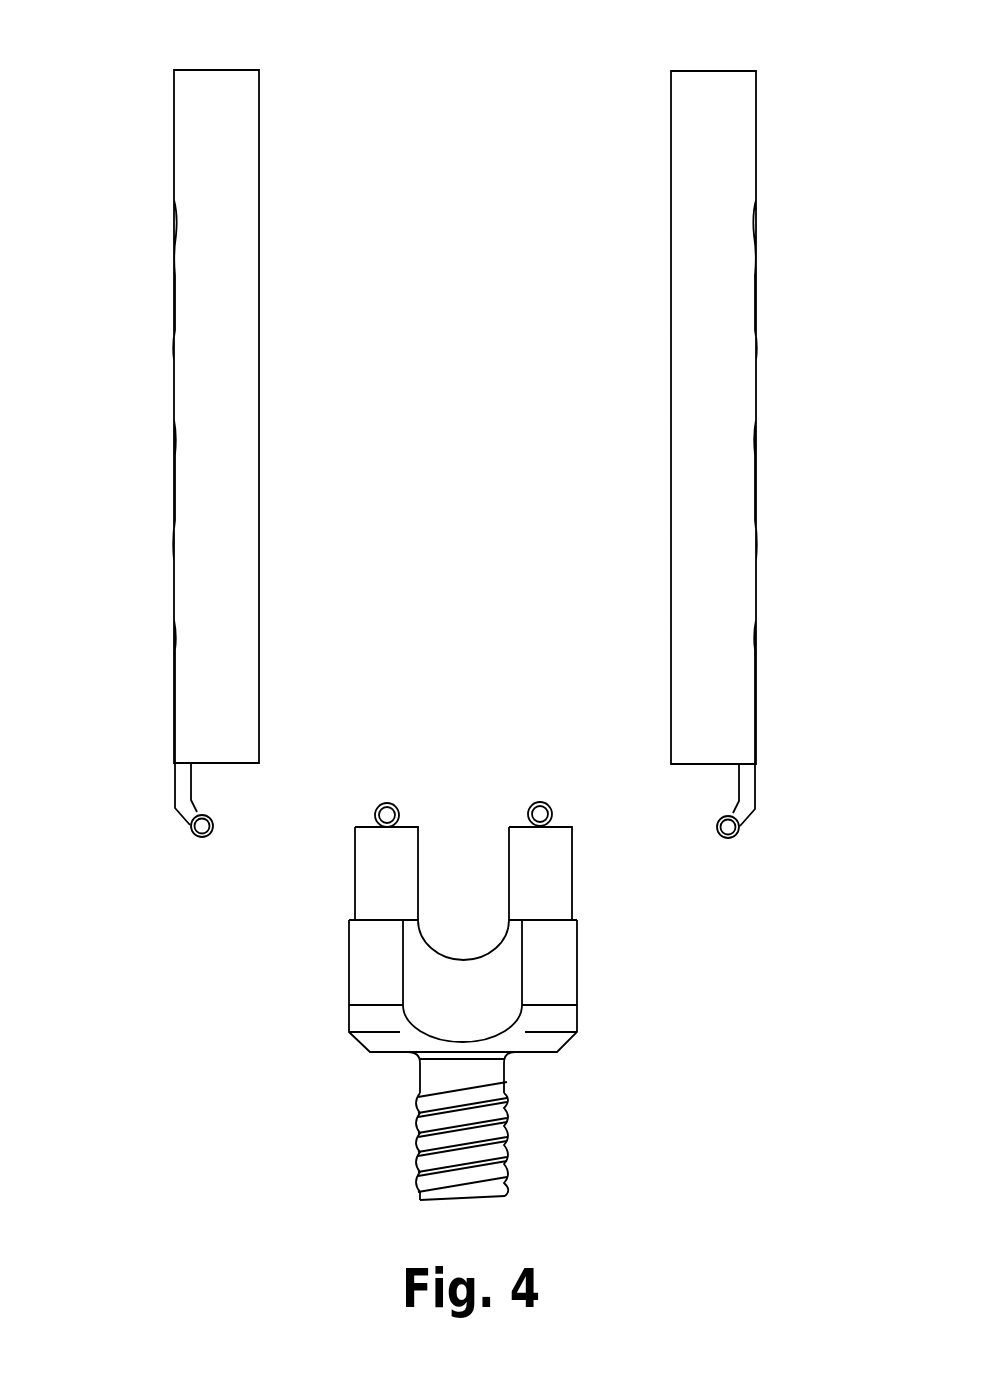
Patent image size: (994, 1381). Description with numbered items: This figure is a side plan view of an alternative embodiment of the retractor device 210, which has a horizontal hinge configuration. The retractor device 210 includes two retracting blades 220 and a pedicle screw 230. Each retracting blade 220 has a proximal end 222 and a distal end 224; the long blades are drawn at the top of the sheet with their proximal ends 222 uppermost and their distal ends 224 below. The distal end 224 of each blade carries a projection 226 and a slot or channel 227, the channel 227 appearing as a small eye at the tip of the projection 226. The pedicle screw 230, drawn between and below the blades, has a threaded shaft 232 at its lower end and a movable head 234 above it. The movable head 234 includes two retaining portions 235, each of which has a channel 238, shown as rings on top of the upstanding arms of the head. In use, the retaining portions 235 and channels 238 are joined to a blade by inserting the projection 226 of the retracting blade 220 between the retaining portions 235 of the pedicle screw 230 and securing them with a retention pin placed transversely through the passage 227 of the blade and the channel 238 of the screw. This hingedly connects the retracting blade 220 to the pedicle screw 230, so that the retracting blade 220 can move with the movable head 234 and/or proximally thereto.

The retractor device 210 is at (518, 45).
The retracting blade 220 is at (197, 377).
The proximal end 222 is at (203, 115).
The distal end 224 is at (183, 742).
The projection 226 is at (183, 793).
The slot or channel 227 is at (198, 827).
The pedicle screw 230 is at (420, 1067).
The threaded shaft 232 is at (415, 1130).
The movable head 234 is at (365, 1018).
The retaining portion 235 is at (490, 805).
The channel 238 is at (387, 803).